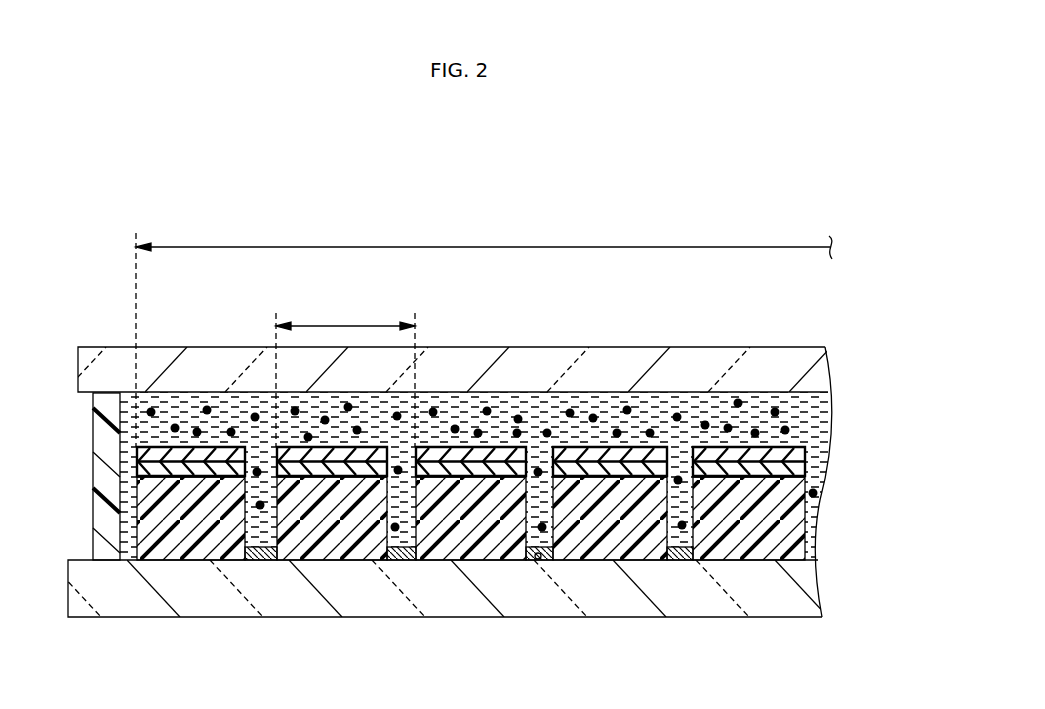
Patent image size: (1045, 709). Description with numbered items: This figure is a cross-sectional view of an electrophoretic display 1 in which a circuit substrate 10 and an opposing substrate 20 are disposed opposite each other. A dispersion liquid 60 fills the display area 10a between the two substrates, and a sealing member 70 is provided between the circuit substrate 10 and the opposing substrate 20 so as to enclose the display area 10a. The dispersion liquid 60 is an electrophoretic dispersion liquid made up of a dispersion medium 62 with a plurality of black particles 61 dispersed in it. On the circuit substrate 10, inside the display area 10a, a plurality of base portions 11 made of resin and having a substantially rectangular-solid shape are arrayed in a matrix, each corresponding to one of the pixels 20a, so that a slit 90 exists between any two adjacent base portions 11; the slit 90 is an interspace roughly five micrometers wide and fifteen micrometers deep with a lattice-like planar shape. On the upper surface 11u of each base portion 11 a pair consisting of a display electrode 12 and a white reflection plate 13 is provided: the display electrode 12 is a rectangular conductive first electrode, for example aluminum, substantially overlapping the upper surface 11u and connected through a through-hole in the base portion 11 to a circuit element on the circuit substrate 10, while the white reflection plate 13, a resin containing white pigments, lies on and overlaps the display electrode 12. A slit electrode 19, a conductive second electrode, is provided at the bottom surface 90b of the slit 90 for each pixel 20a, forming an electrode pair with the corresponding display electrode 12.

The electrophoretic display 1 is at (560, 140).
The circuit substrate 10 is at (806, 587).
The display area 10a is at (484, 335).
The base portion 11 is at (293, 553).
The upper surface 11u is at (460, 477).
The display electrode 12 is at (335, 475).
The white reflection plate 13 is at (360, 455).
The slit electrode 19 is at (405, 556).
The opposing substrate 20 is at (823, 358).
The pixel 20a is at (345, 374).
The dispersion liquid 60 is at (522, 476).
The black particles 61 is at (776, 412).
The dispersion medium 62 is at (818, 438).
The sealing member 70 is at (100, 473).
The slit 90 is at (538, 452).
The bottom surface 90b is at (538, 559).